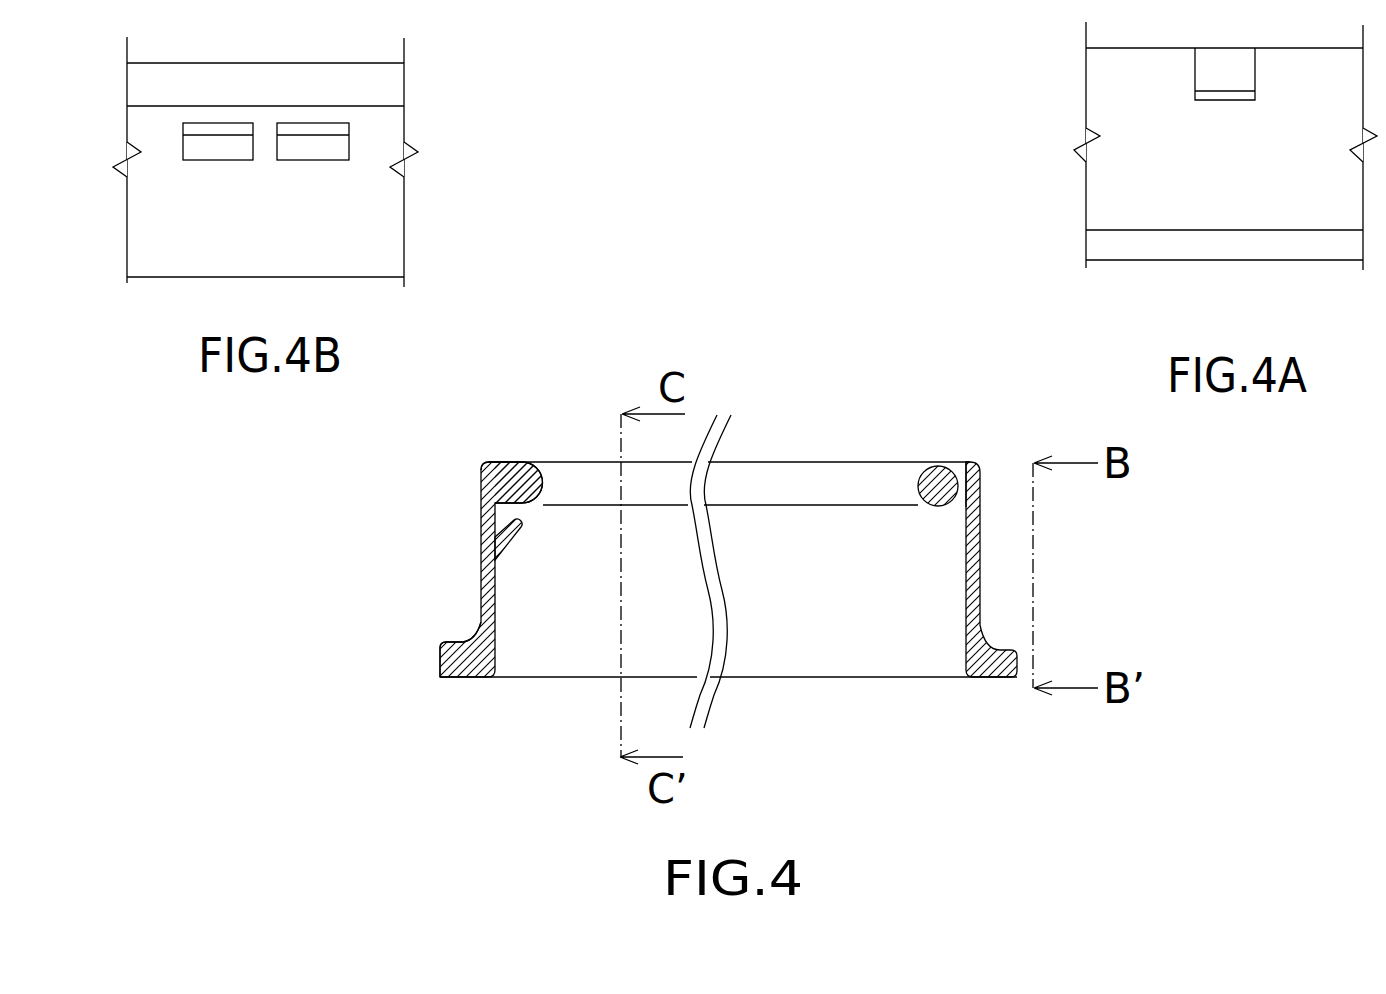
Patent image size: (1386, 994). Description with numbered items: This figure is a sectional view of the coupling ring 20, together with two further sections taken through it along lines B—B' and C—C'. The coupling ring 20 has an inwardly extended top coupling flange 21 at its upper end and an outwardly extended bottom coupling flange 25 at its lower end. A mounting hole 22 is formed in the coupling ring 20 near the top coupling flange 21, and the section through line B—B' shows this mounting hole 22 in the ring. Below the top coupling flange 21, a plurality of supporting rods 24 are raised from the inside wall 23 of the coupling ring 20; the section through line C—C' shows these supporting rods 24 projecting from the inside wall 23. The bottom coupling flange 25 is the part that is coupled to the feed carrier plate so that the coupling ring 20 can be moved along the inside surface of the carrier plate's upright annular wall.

In FIG. 4, the coupling ring 20 is at (731, 533).
In FIG. 4, the top coupling flange 21 is at (522, 466).
In FIG. 4, the mounting hole 22 is at (975, 488).
In FIG. 4A, the mounting hole 22 is at (1223, 80).
In FIG. 4, the inside wall 23 is at (496, 618).
In FIG. 4, the supporting rods 24 is at (508, 536).
In FIG. 4B, the supporting rods 24 is at (338, 148).
In FIG. 4, the bottom coupling flange 25 is at (462, 678).